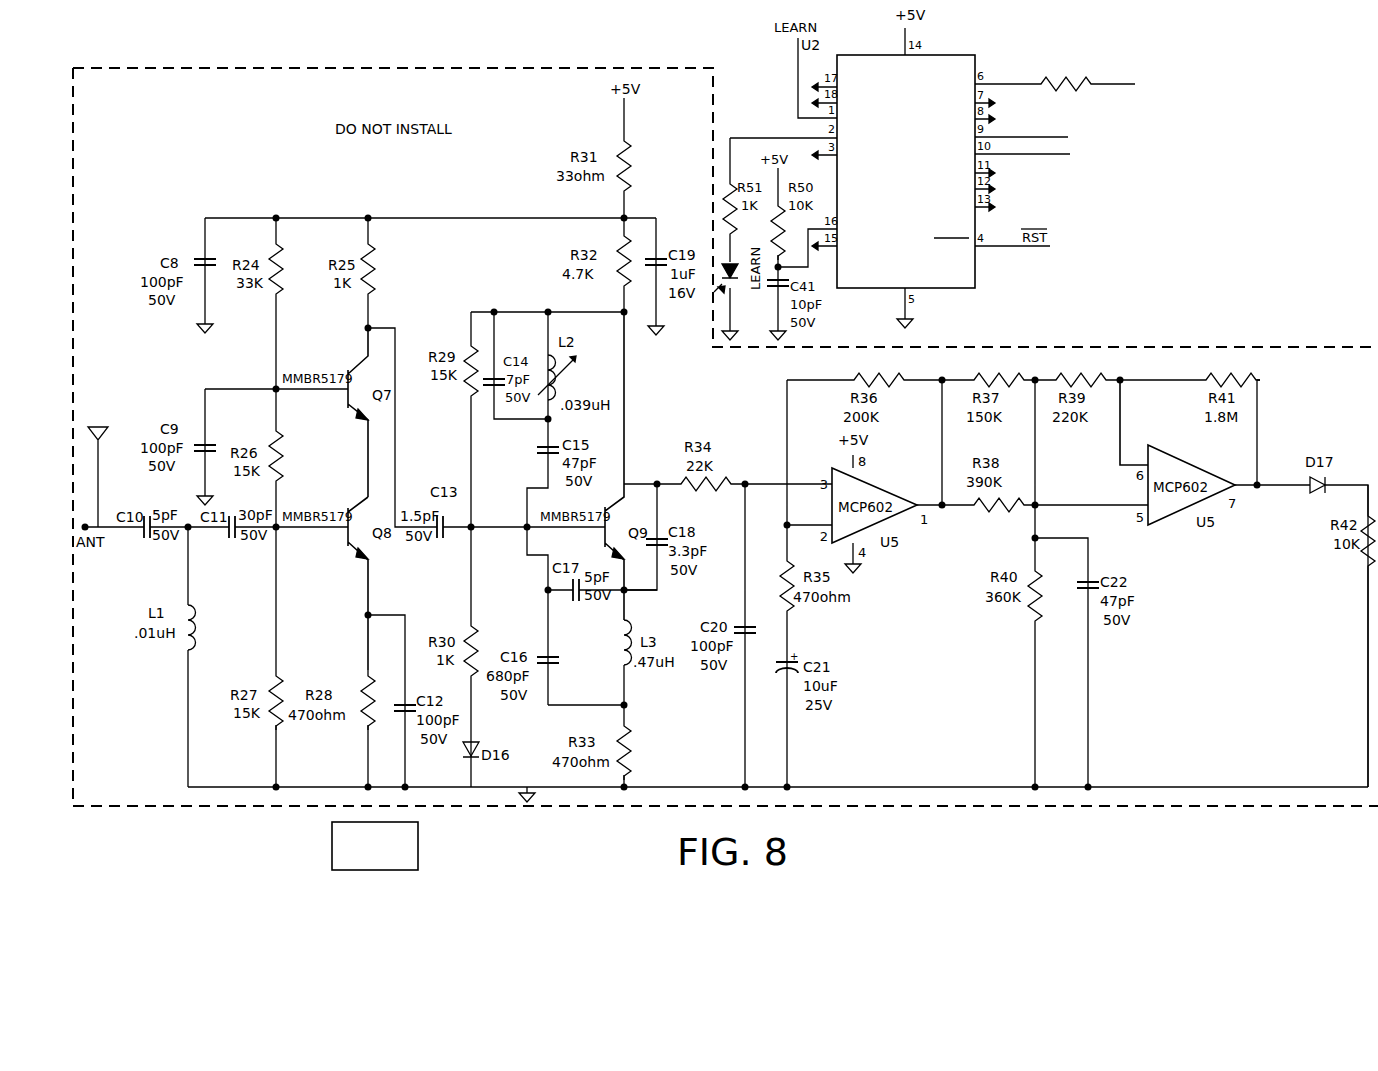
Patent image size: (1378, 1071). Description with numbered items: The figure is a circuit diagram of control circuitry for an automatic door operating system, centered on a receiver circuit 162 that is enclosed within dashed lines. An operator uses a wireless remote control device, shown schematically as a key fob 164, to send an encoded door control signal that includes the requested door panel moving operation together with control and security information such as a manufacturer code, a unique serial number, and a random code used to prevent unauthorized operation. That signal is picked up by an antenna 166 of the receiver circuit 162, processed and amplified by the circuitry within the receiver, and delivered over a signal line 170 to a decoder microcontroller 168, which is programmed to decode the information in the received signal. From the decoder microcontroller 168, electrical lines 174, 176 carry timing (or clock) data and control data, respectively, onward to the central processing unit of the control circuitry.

The receiver circuit 162 is at (238, 67).
The key fob 164 is at (375, 846).
The antenna 166 is at (101, 465).
The decoder microcontroller 168 is at (958, 265).
The signal line 170 is at (1122, 83).
The electrical line 174 is at (1066, 155).
The electrical line 176 is at (1062, 137).